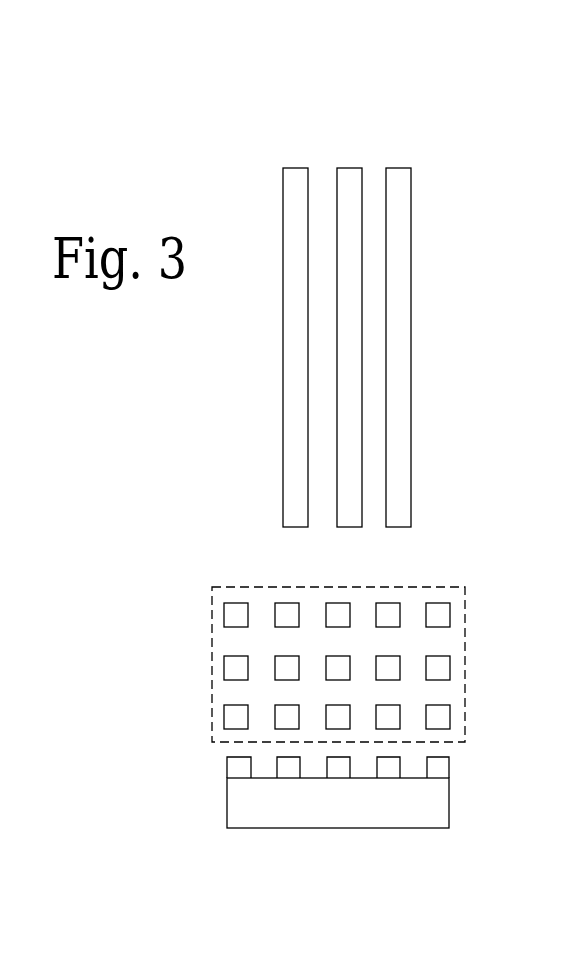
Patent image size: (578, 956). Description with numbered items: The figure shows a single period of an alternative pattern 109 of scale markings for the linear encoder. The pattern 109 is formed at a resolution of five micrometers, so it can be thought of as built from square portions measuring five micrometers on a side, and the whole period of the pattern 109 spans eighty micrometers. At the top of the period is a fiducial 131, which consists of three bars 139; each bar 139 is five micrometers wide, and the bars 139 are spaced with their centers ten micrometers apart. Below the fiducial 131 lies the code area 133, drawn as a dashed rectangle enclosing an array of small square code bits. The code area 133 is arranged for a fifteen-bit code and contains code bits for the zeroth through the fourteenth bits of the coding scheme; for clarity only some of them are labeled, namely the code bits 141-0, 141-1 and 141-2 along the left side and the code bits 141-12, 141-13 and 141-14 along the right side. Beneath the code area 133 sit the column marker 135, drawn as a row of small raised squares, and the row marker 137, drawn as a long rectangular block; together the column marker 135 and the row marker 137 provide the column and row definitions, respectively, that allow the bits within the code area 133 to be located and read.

The pattern 109 is at (468, 91).
The fiducial 131 is at (280, 142).
The bar 139 is at (392, 168).
The code area 133 is at (452, 586).
The code bit 141-0 is at (233, 720).
The code bit 141-1 is at (237, 668).
The code bit 141-2 is at (235, 615).
The code bit 141-12 is at (436, 715).
The code bit 141-13 is at (436, 666).
The code bit 141-14 is at (435, 614).
The column marker 135 is at (454, 766).
The row marker 137 is at (427, 828).